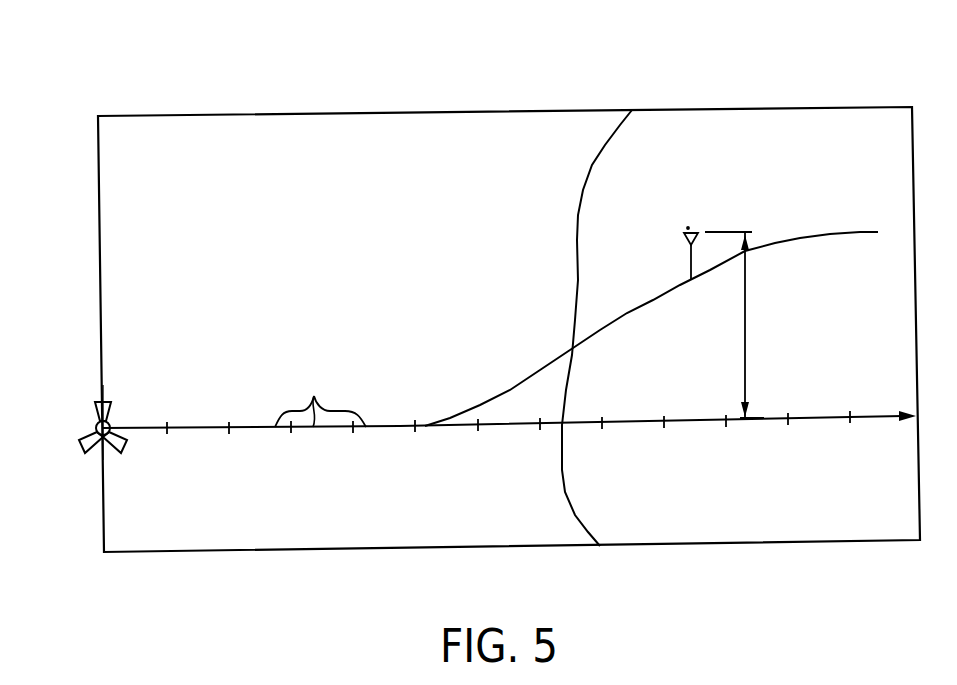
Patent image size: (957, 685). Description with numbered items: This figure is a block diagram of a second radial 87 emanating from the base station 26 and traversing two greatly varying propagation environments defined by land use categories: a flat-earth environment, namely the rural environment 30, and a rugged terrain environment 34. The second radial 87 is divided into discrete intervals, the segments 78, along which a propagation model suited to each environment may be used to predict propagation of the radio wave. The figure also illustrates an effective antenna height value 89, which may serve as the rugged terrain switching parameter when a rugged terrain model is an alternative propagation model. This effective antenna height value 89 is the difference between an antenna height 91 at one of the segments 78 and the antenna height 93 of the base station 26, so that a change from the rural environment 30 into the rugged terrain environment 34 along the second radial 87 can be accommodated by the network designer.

The base station 26 is at (95, 425).
The rural environment 30 is at (455, 126).
The rugged terrain environment 34 is at (844, 124).
The segments 78 is at (785, 392).
The second radial 87 is at (870, 416).
The effective antenna height value 89 is at (748, 330).
The antenna height 91 is at (742, 232).
The antenna height of base station 93 is at (762, 418).